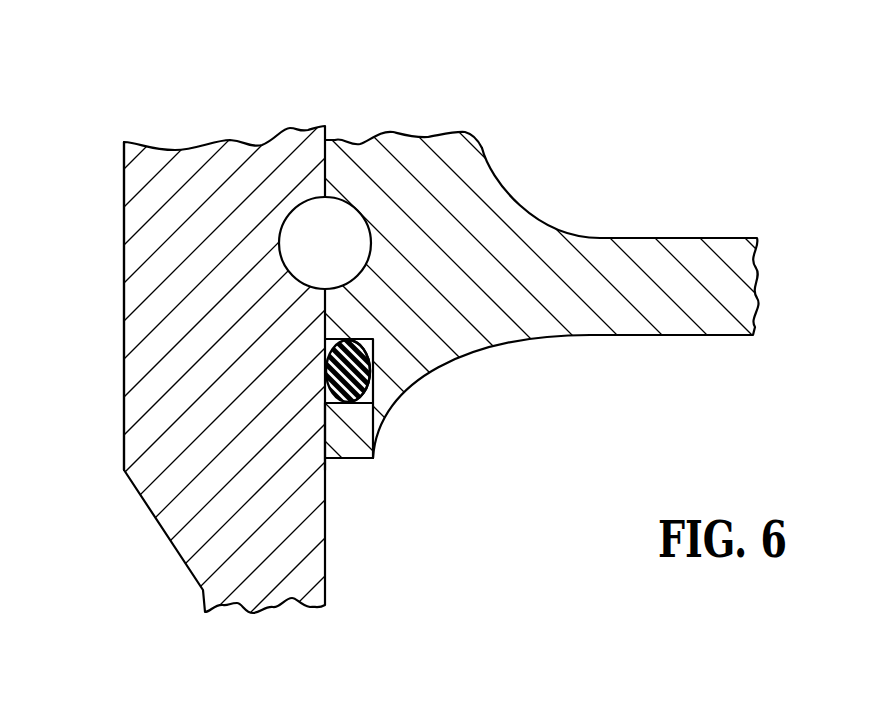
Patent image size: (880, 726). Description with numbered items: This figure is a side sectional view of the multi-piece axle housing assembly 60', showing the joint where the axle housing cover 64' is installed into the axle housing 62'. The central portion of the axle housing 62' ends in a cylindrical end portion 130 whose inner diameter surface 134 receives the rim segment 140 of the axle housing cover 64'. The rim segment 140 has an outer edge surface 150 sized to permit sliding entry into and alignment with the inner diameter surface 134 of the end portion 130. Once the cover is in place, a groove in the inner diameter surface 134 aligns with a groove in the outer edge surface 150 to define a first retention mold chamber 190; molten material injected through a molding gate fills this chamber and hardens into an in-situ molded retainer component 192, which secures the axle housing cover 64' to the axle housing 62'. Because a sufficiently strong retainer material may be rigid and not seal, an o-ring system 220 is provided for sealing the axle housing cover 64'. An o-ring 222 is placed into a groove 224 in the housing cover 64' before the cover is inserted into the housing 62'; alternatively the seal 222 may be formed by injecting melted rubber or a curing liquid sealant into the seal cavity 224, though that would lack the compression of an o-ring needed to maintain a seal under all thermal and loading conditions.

The multi-piece axle housing assembly 60' is at (419, 345).
The axle housing 62' is at (82, 306).
The axle housing cover 64' is at (440, 285).
The cylindrical end portion 130 is at (147, 247).
The inner diameter surface 134 is at (340, 142).
The rim segment 140 is at (644, 249).
The outer edge surface 150 is at (330, 420).
The first retention mold chamber 190 is at (367, 236).
The in-situ molded retainer component 192 is at (313, 220).
The o-ring system 220 is at (384, 390).
The o-ring 222 is at (353, 405).
The groove 224 is at (373, 369).